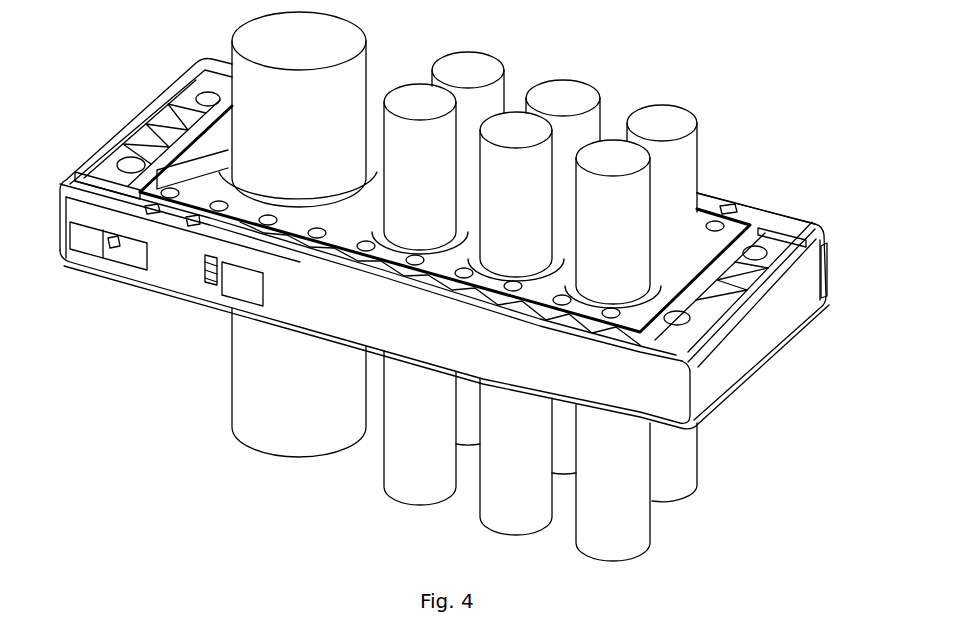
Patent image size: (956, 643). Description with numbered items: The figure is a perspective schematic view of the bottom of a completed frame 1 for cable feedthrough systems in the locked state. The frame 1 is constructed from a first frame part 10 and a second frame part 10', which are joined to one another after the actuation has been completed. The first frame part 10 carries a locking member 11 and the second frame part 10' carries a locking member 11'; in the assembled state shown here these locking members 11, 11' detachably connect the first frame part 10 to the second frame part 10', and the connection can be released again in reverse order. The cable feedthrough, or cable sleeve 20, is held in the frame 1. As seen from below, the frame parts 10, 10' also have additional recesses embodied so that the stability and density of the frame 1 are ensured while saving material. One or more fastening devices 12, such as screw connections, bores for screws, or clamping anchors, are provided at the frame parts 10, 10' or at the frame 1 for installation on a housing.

The frame 1 is at (160, 46).
The first frame part 10 is at (439, 286).
The second frame part 10' is at (756, 129).
The locking member 11 is at (113, 301).
The locking member 11' is at (829, 339).
The fastening device 12 is at (188, 94).
The cable sleeve 20 is at (235, 220).